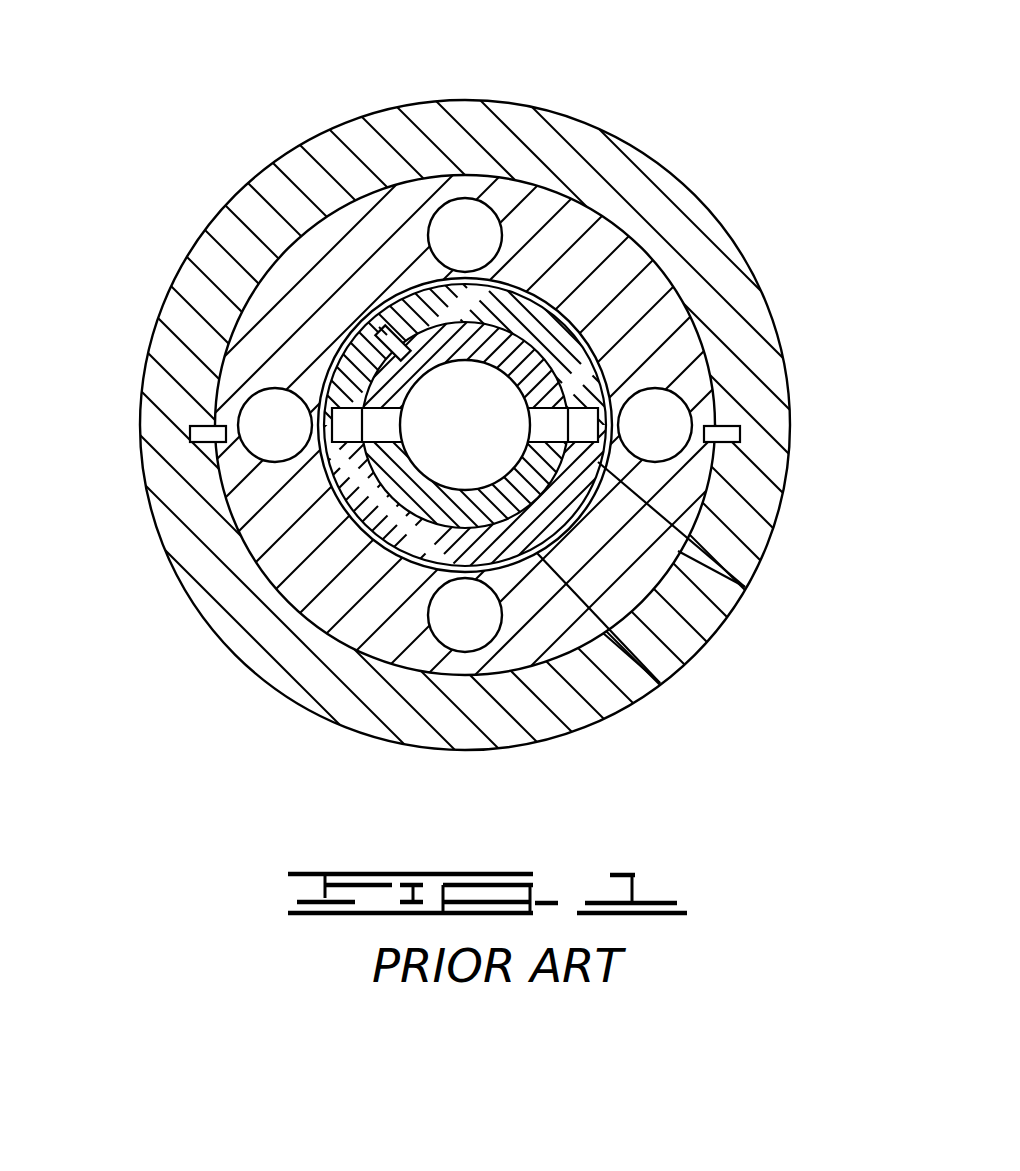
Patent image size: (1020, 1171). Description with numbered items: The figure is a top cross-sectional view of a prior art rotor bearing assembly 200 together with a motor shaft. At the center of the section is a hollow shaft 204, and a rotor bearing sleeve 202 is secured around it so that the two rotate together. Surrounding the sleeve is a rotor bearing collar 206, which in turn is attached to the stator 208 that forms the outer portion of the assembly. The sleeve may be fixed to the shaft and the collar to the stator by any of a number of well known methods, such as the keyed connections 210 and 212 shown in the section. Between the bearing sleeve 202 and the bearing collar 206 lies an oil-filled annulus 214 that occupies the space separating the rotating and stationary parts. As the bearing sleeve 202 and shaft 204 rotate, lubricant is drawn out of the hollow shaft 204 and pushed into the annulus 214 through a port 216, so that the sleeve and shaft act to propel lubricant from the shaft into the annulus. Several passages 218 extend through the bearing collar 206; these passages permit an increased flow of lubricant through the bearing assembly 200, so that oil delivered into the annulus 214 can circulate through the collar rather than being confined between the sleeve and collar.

The rotor bearing assembly 200 is at (212, 128).
The rotor bearing sleeve 202 is at (528, 318).
The hollow shaft 204 is at (530, 378).
The rotor bearing collar 206 is at (535, 212).
The stator 208 is at (476, 118).
The keyed connection 210 is at (741, 435).
The keyed connection 212 is at (383, 334).
The oil-filled annulus 214 is at (662, 682).
The port 216 is at (747, 590).
The passages 218 is at (455, 220).